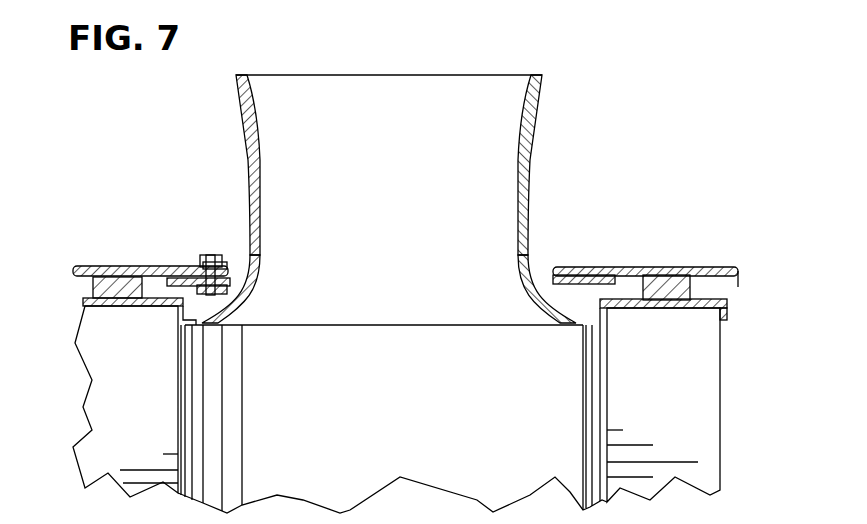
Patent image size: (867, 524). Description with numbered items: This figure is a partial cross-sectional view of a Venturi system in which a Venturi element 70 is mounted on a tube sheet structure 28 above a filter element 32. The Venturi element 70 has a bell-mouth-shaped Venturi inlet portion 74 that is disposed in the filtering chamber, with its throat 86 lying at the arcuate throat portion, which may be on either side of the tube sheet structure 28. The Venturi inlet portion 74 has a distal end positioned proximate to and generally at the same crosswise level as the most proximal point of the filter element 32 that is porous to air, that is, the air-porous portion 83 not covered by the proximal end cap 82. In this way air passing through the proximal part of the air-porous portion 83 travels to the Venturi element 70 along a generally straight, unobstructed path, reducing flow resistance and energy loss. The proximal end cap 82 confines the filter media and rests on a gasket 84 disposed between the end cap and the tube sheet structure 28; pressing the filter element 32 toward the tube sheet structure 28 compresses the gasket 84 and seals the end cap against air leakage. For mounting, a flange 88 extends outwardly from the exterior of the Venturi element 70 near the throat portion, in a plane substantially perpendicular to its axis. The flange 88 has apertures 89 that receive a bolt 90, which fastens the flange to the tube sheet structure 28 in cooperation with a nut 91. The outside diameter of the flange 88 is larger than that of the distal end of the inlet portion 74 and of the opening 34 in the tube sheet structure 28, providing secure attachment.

The Venturi element 70 is at (575, 99).
The Venturi inlet portion 74 is at (225, 302).
The throat 86 is at (512, 259).
The gasket 84 is at (100, 273).
The opening 34 is at (557, 277).
The flange 88 is at (595, 276).
The tube sheet structure 28 is at (666, 269).
The proximal end cap 82 is at (172, 329).
The air-porous portion 83 is at (735, 414).
The filter element 32 is at (210, 444).
The apertures 89 is at (200, 267).
The bolt 90 is at (211, 268).
The nut 91 is at (207, 272).